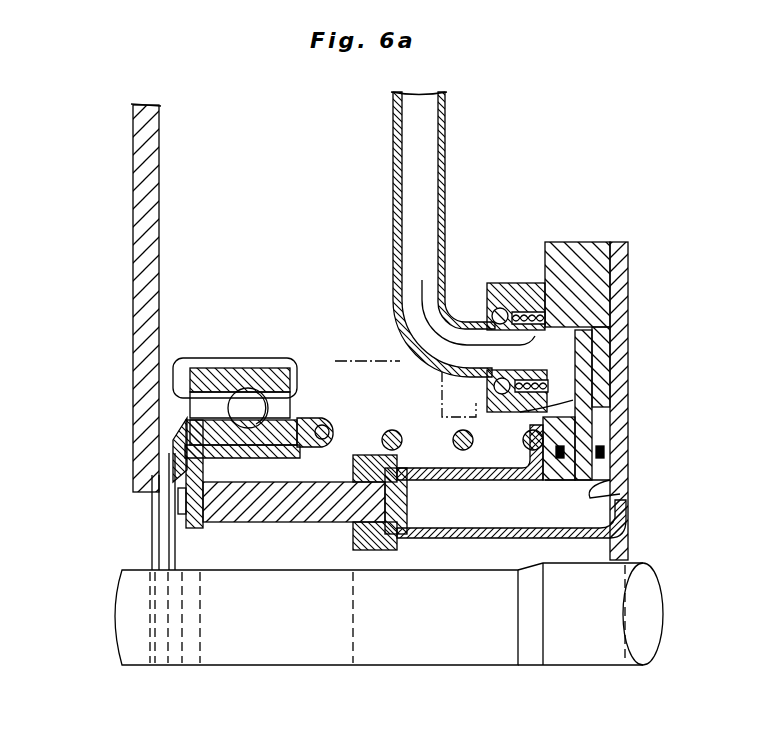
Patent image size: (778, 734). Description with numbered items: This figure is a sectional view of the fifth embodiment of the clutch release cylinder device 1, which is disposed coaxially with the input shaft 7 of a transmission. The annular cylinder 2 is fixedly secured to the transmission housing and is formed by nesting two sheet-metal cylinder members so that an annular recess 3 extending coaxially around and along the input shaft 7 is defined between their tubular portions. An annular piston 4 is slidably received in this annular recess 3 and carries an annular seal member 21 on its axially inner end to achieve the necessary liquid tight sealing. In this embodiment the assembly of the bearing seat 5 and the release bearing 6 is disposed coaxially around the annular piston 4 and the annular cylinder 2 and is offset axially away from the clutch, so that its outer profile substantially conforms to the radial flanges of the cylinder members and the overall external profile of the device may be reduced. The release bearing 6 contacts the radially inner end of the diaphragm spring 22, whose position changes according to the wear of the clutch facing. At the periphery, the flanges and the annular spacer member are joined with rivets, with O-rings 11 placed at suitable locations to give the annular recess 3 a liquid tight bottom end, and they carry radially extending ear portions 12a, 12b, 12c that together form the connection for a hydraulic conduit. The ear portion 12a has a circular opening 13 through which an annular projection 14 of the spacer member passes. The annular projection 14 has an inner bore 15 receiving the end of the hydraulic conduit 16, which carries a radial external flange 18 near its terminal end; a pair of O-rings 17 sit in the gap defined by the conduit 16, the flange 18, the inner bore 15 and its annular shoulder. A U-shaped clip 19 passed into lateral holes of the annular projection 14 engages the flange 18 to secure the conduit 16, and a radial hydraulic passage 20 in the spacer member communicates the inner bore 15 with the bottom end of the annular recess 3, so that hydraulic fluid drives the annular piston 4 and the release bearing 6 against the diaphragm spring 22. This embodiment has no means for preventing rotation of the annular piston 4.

The clutch release cylinder device 1 is at (503, 147).
The annular cylinder 2 is at (450, 500).
The annular recess 3 is at (504, 520).
The annular piston 4 is at (293, 522).
The bearing seat 5 is at (252, 447).
The release bearing 6 is at (202, 414).
The input shaft 7 is at (138, 570).
The O-rings 11 is at (562, 449).
The ear portion 12a is at (545, 244).
The ear portion 12b is at (629, 250).
The ear portion 12c is at (587, 242).
The circular opening 13 is at (537, 284).
The annular projection 14 is at (500, 283).
The inner bore 15 is at (420, 278).
The hydraulic conduit 16 is at (393, 297).
The O-rings 17 is at (575, 348).
The radial external flange 18 is at (560, 381).
The U-shaped clip 19 is at (525, 410).
The radial hydraulic passage 20 is at (620, 494).
The annular seal member 21 is at (413, 528).
The diaphragm spring 22 is at (133, 238).